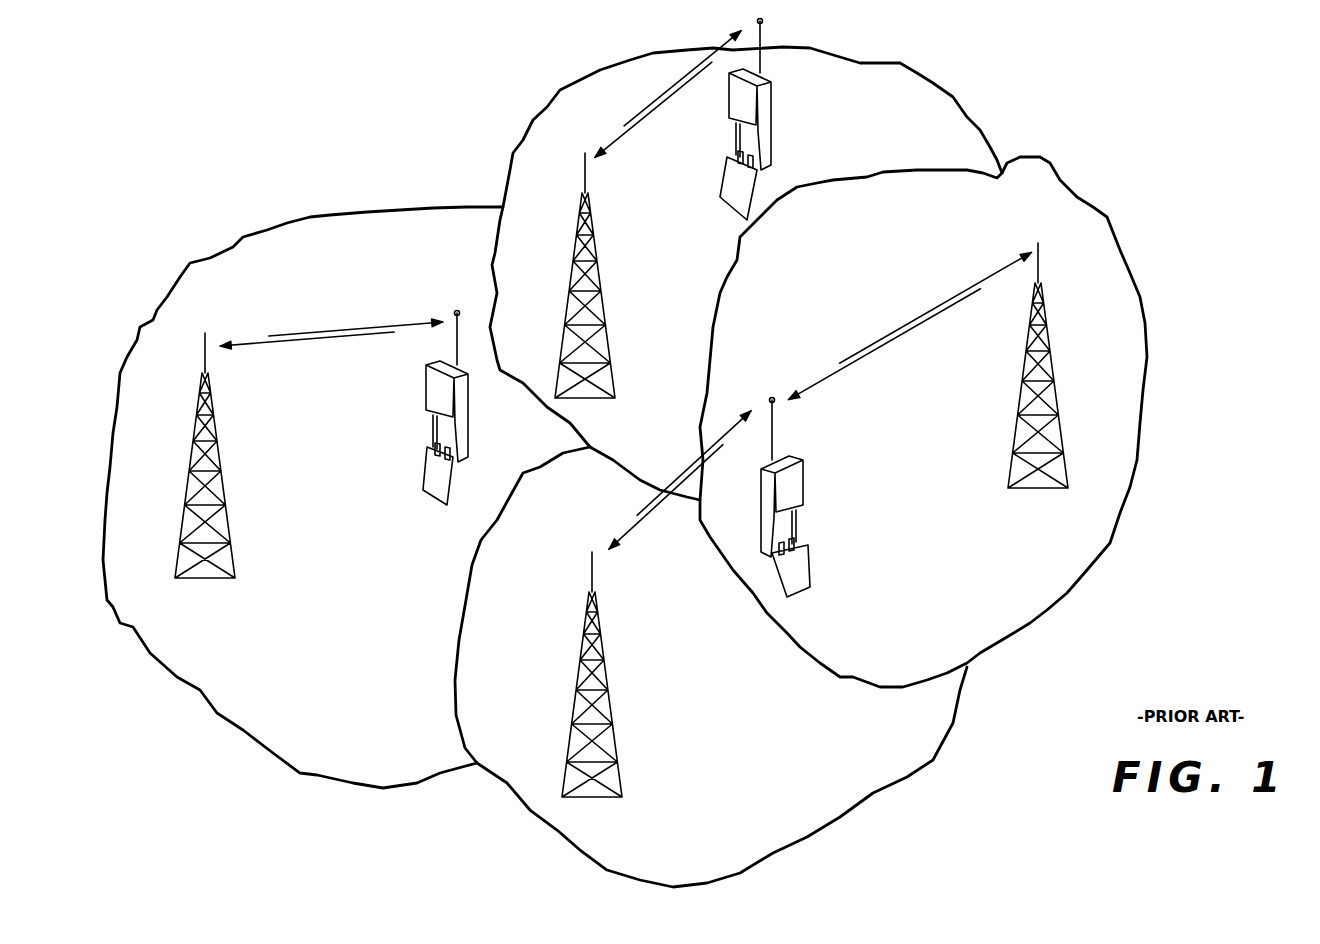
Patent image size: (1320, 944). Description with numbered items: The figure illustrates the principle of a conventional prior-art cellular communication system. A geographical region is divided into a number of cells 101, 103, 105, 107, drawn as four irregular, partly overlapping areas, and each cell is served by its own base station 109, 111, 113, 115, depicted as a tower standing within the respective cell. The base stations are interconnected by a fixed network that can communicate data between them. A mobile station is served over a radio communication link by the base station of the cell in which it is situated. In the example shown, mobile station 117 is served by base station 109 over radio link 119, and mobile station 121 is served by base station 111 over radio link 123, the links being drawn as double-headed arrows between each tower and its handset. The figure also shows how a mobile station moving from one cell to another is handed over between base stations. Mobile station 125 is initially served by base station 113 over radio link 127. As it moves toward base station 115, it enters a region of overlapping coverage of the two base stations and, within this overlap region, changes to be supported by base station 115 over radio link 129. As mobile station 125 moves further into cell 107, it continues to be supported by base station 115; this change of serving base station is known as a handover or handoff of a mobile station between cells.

The cell 101 is at (190, 263).
The cell 103 is at (560, 88).
The cell 105 is at (1110, 218).
The cell 107 is at (930, 767).
The base station 109 is at (228, 508).
The base station 111 is at (593, 227).
The base station 113 is at (1027, 373).
The base station 115 is at (613, 715).
The mobile station 117 is at (420, 477).
The radio link 119 is at (320, 328).
The mobile station 121 is at (717, 198).
The radio link 123 is at (647, 117).
The mobile station 125 is at (817, 580).
The radio link 127 is at (920, 317).
The radio link 129 is at (650, 517).